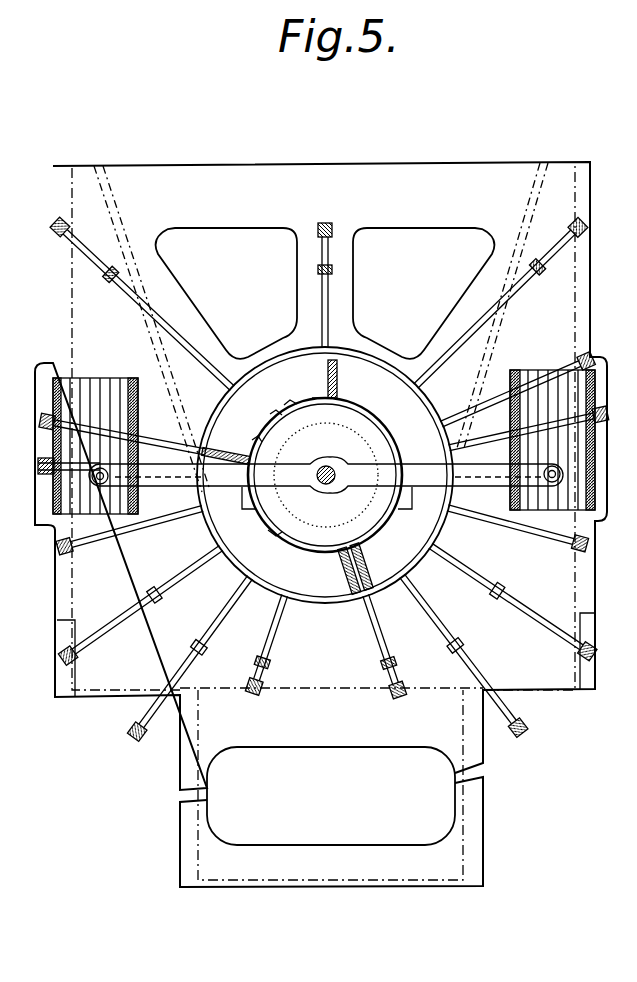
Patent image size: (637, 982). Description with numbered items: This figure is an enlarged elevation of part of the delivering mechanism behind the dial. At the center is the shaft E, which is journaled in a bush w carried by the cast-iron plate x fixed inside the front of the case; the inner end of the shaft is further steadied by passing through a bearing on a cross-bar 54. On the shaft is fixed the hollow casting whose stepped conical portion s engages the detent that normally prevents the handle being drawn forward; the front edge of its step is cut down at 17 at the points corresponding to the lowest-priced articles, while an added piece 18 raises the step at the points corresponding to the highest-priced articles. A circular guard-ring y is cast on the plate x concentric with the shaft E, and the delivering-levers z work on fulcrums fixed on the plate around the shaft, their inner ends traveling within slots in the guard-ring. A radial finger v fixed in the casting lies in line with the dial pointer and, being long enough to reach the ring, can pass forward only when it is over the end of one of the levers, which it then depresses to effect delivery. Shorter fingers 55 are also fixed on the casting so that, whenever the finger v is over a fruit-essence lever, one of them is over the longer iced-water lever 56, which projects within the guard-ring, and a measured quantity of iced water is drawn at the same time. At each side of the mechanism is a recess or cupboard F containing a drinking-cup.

The cast-iron plate x is at (321, 524).
The recess or cupboard F is at (324, 442).
The circular guard-ring y is at (372, 362).
The bush w is at (362, 426).
The conical portion of casting s is at (398, 446).
The shaft E is at (335, 470).
The radial bar or finger v is at (228, 456).
The cut-down front edge of step 17 is at (295, 404).
The added piece 18 is at (276, 416).
The short fingers 55 is at (338, 380).
The cross-bar 54 is at (300, 475).
The iced-water lever 56 is at (381, 646).
The delivering-levers z is at (324, 479).